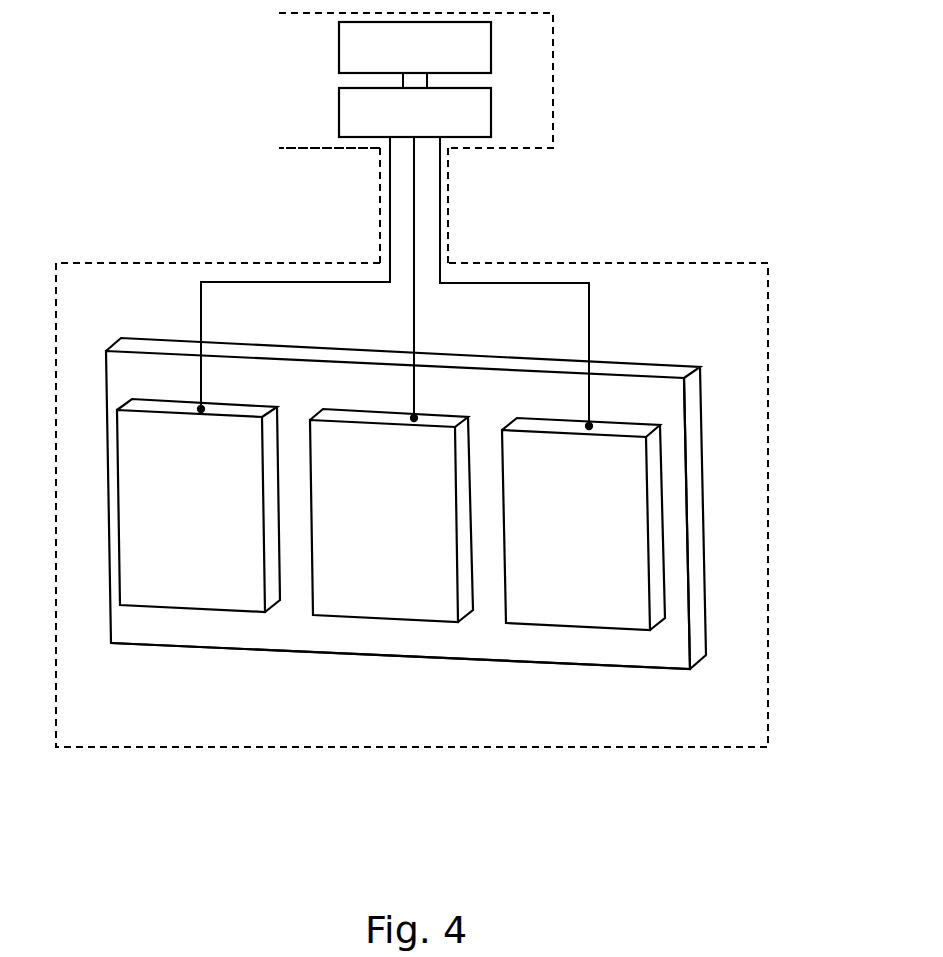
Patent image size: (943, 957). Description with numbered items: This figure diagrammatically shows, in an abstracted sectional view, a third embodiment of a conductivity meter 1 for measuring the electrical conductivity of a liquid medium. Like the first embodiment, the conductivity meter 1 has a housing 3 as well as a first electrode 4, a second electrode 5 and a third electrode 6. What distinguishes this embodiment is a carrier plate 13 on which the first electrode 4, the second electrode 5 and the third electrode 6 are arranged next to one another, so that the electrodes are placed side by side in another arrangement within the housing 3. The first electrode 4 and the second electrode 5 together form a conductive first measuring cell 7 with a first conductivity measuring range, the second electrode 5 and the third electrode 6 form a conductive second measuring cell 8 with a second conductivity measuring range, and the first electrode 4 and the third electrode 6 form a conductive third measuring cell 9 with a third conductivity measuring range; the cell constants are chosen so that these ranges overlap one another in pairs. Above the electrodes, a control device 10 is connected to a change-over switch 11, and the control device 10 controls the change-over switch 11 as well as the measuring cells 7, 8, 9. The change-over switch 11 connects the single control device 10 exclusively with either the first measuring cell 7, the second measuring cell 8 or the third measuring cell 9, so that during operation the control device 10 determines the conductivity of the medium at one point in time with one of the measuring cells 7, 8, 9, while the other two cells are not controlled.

The conductivity meter 1 is at (732, 118).
The housing 3 is at (730, 713).
The first electrode 4 is at (215, 585).
The second electrode 5 is at (402, 598).
The third electrode 6 is at (599, 607).
The first measuring cell 7 is at (292, 632).
The second measuring cell 8 is at (483, 642).
The third measuring cell 9 is at (462, 392).
The control device 10 is at (415, 47).
The change-over switch 11 is at (415, 105).
The carrier plate 13 is at (681, 648).